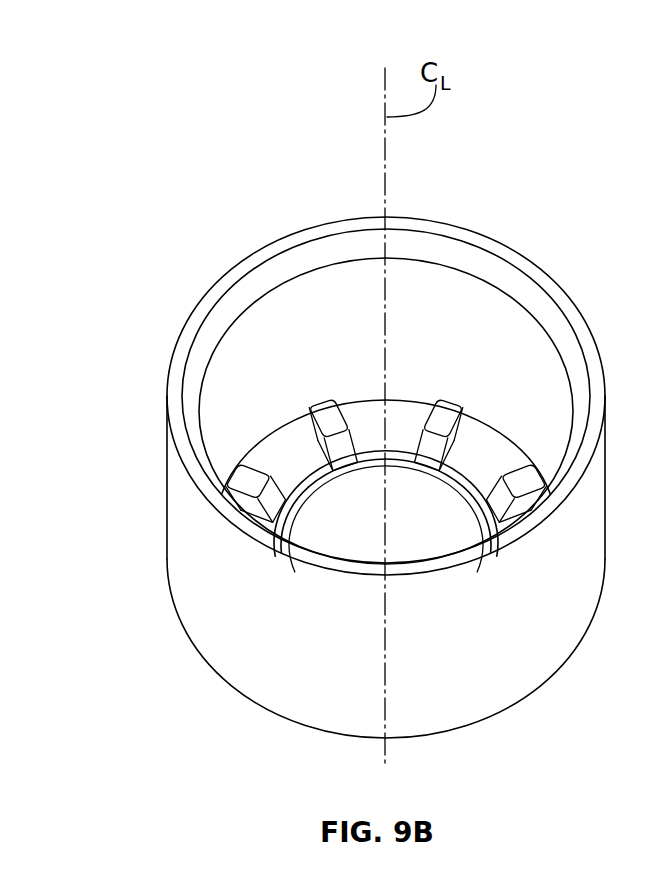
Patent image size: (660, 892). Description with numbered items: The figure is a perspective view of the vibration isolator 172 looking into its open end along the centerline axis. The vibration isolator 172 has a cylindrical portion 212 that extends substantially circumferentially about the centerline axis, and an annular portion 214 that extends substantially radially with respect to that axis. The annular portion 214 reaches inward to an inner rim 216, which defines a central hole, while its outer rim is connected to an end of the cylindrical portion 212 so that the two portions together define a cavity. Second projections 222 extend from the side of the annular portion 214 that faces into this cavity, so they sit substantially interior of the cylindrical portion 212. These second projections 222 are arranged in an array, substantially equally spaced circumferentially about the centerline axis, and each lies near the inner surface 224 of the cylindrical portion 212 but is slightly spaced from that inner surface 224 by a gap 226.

The vibration isolator 172 is at (205, 60).
The cylindrical portion 212 is at (168, 523).
The annular portion 214 is at (405, 428).
The inner rim 216 is at (318, 497).
The second projections 222 is at (324, 417).
The inner surface 224 is at (336, 276).
The gap 226 is at (469, 425).